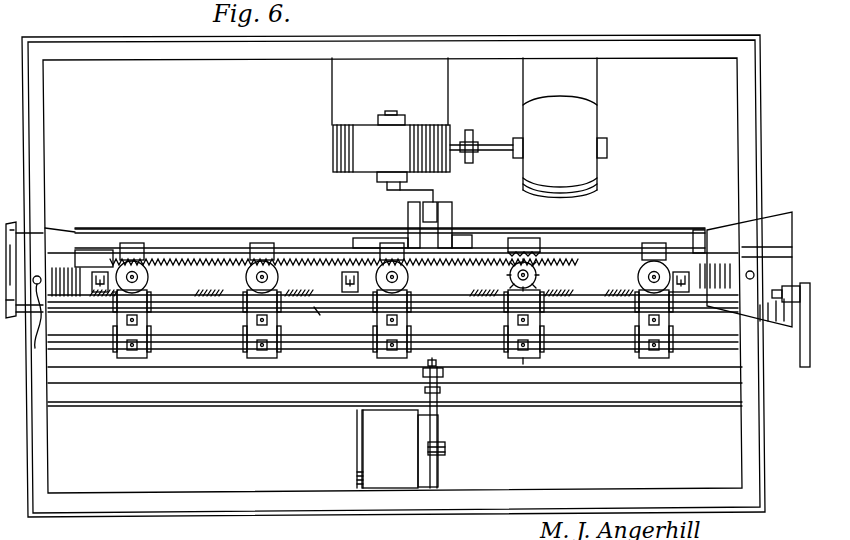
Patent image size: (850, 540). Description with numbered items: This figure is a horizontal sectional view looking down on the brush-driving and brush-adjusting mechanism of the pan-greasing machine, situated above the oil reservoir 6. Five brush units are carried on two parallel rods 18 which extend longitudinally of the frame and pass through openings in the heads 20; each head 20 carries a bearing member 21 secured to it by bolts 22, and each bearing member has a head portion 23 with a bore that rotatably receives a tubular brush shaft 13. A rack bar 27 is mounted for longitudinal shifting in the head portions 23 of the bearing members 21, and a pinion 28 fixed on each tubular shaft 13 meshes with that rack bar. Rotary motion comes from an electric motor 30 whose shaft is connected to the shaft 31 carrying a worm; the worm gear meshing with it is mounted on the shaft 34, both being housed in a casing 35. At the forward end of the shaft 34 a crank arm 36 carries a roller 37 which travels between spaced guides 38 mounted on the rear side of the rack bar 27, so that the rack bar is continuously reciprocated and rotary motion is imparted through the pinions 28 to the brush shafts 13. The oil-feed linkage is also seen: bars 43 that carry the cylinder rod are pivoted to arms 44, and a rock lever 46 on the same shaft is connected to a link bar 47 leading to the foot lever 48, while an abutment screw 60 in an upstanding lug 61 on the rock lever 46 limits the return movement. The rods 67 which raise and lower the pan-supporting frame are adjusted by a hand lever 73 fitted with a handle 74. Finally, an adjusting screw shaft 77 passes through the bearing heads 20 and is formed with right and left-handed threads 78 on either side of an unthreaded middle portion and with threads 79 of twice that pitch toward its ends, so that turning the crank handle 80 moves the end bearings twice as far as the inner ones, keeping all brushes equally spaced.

The oil reservoir 6 is at (178, 232).
The tubular shaft 13 is at (262, 262).
The rods 18 is at (60, 250).
The head 20 is at (258, 365).
The bearing member 21 is at (540, 318).
The bolts 22 is at (523, 364).
The head portion 23 is at (280, 277).
The rack bar 27 is at (600, 248).
The pinion 28 is at (508, 300).
The electric motor 30 is at (587, 128).
The shaft 31 is at (490, 147).
The shaft 34 is at (395, 178).
The casing 35 is at (375, 125).
The crank arm 36 is at (418, 184).
The roller 37 is at (437, 210).
The spaced guides 38 is at (410, 212).
The bars 43 is at (95, 365).
The arms 44 is at (681, 272).
The rock lever 46 is at (437, 420).
The link bar 47 is at (445, 452).
The foot lever 48 is at (418, 435).
The abutment screw 60 is at (434, 366).
The upstanding lug 61 is at (445, 372).
The rods 67 is at (752, 270).
The hand lever 73 is at (357, 418).
The handle 74 is at (357, 465).
The adjusting screw shaft 77 is at (318, 320).
The threads 78 is at (393, 302).
The threads 79 is at (393, 302).
The crank handle 80 is at (805, 367).